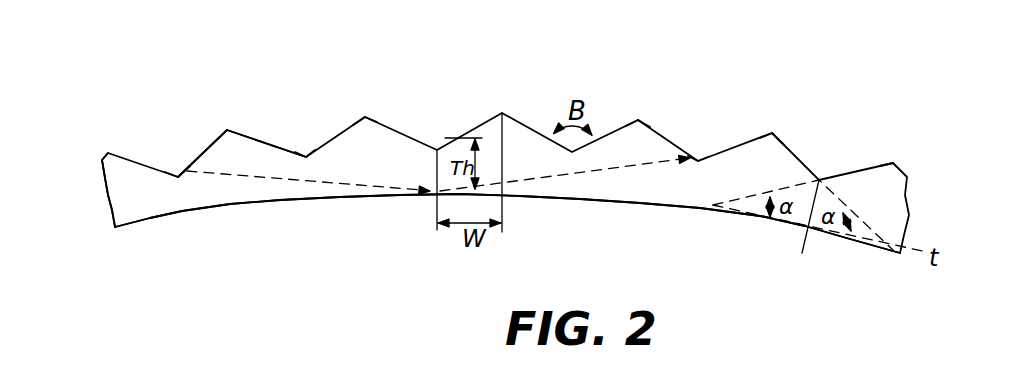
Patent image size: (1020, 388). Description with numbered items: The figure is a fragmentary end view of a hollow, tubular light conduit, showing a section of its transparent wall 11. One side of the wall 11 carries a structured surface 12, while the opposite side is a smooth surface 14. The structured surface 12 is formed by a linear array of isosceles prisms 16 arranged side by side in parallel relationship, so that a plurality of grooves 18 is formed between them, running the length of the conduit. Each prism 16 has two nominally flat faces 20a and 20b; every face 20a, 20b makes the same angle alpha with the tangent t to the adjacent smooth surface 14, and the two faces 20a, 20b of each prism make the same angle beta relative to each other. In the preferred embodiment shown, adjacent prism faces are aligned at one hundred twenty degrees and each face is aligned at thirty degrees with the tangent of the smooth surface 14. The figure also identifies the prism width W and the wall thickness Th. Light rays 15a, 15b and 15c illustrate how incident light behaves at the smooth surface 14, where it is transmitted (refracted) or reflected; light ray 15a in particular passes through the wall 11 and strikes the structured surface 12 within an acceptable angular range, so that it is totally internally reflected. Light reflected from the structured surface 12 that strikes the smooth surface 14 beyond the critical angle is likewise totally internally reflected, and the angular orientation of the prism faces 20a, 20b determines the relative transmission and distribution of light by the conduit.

The wall 11 is at (897, 203).
The structured surface 12 is at (123, 157).
The smooth surface 14 is at (137, 227).
The light ray 15a is at (183, 180).
The light ray 15b is at (422, 106).
The light ray 15c is at (529, 84).
The isosceles prism 16 is at (363, 127).
The groove 18 is at (177, 173).
The prism face 20a is at (210, 142).
The prism face 20b is at (255, 137).